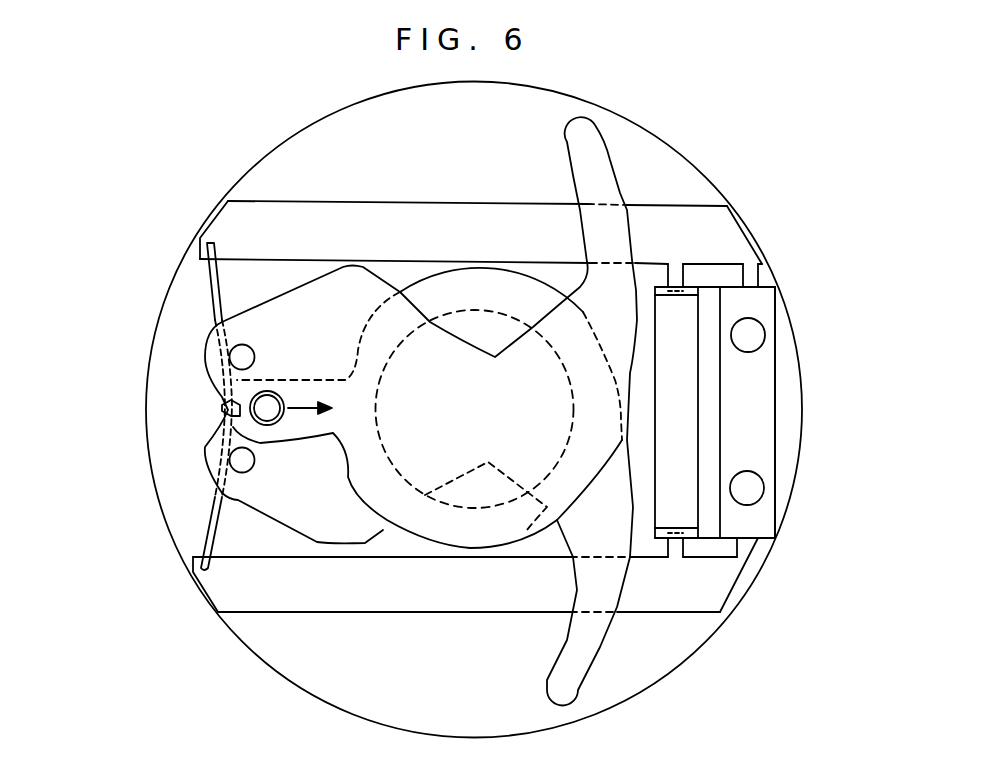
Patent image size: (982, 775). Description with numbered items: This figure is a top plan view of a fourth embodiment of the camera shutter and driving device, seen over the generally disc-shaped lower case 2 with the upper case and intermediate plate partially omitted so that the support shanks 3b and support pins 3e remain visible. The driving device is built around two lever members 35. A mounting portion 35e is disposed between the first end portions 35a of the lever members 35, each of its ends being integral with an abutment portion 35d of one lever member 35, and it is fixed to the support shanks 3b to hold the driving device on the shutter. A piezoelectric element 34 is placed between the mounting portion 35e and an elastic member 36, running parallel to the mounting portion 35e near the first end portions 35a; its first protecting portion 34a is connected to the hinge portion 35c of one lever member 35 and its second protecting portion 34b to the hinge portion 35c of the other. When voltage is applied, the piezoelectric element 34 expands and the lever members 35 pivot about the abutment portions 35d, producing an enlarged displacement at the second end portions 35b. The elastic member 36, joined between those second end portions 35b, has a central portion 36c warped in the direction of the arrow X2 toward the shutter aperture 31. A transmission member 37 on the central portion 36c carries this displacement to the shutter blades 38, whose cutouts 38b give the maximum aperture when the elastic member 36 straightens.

The lower case 2 is at (612, 110).
The lever members 35 is at (285, 212).
The first end portions 35a is at (733, 223).
The second end portions 35b is at (223, 220).
The hinge portion 35c is at (721, 247).
The abutment portion 35d is at (760, 275).
The mounting portion 35e is at (773, 437).
The piezoelectric element 34 is at (773, 390).
The first protecting portion 34a is at (758, 268).
The second protecting portion 34b is at (700, 540).
The support shanks 3b is at (752, 338).
The support pins 3e is at (240, 357).
The elastic member 36 is at (204, 291).
The central portion 36c is at (230, 404).
The transmission member 37 is at (255, 412).
The shutter blades 38 is at (380, 282).
The cutouts 38b is at (550, 317).
The shutter aperture 31 is at (571, 423).
The arrow X2 is at (303, 409).